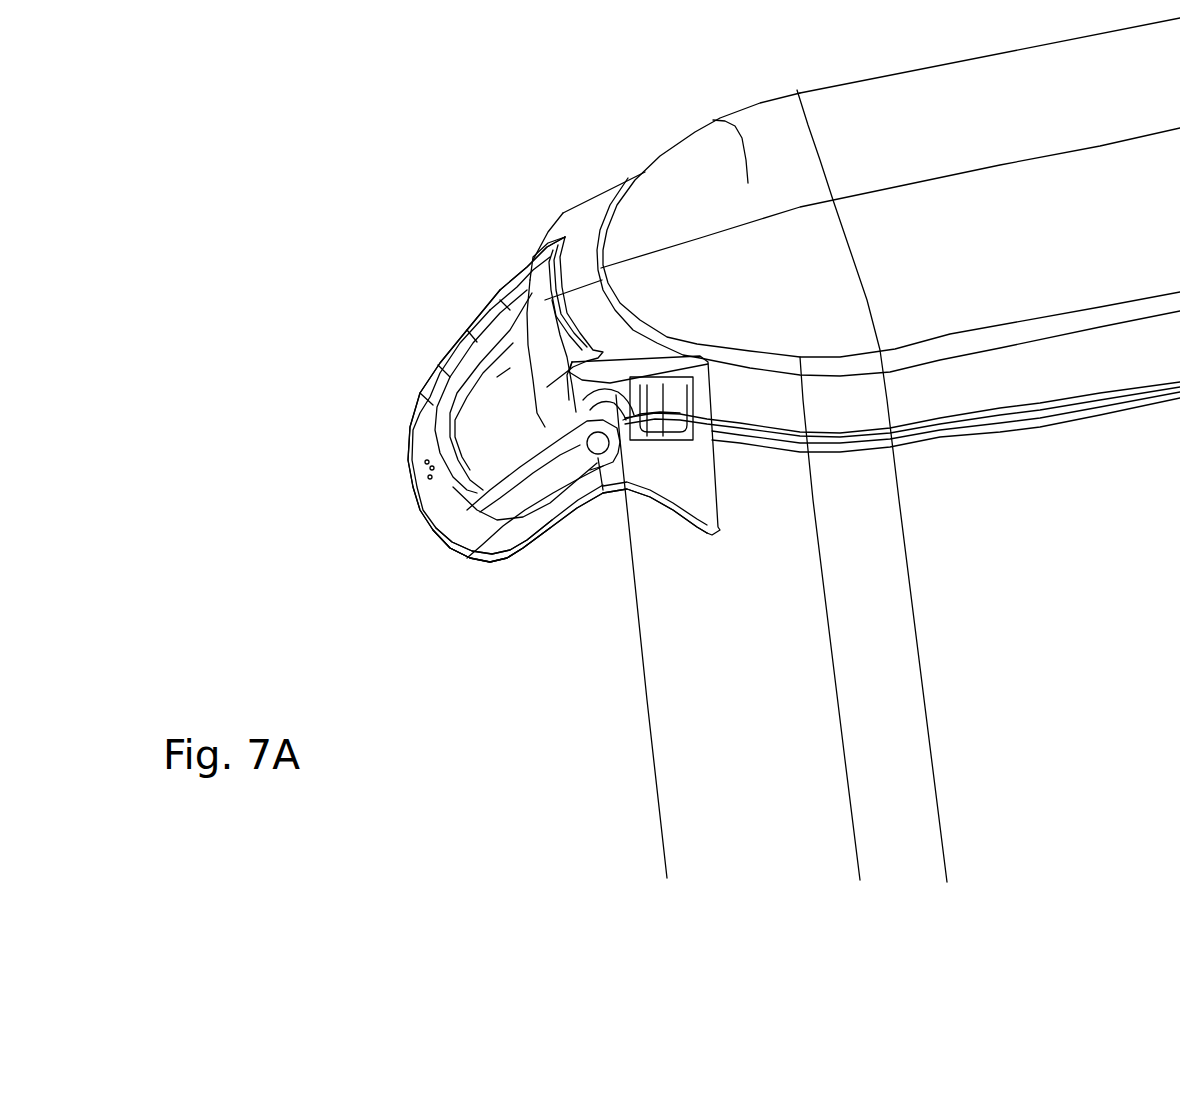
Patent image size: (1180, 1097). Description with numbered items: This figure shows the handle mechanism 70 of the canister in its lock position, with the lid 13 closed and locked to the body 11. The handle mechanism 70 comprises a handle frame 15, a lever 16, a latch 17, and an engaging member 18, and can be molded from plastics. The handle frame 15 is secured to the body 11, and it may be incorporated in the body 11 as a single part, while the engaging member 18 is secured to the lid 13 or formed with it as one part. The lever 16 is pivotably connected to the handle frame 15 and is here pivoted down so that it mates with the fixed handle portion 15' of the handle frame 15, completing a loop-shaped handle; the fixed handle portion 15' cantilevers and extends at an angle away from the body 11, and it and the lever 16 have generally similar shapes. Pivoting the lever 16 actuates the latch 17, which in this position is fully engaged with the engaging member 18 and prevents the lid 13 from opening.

The body 11 is at (743, 742).
The lid 13 is at (713, 120).
The handle frame 15 is at (587, 537).
The fixed handle portion 15' is at (467, 585).
The lever 16 is at (440, 488).
The latch 17 is at (545, 365).
The engaging member 18 is at (572, 227).
The handle mechanism 70 is at (410, 382).